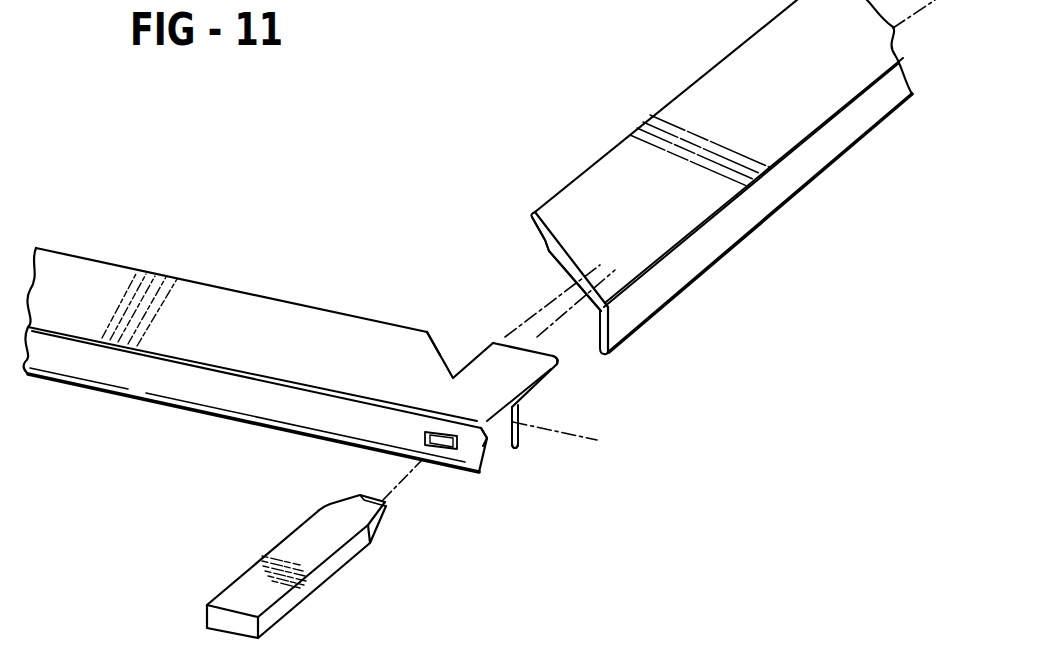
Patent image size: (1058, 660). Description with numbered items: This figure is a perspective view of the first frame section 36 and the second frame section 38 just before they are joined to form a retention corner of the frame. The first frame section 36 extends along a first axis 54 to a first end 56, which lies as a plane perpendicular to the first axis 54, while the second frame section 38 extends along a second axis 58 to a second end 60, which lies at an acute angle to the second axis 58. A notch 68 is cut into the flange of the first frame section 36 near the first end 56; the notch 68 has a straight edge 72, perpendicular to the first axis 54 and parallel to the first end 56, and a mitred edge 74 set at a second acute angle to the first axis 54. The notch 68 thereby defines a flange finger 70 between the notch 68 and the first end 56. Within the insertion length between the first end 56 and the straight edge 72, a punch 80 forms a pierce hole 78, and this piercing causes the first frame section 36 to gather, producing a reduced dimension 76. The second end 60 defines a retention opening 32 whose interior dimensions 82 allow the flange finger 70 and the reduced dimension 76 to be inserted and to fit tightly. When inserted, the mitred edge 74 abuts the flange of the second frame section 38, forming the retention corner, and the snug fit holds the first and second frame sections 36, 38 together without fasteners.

The retention opening 32 is at (603, 294).
The first frame section 36 is at (268, 288).
The second frame section 38 is at (688, 72).
The first axis 54 is at (568, 441).
The first end 56 is at (530, 404).
The second axis 58 is at (555, 311).
The second end 60 is at (572, 280).
The notch 68 is at (448, 316).
The flange finger 70 is at (554, 362).
The straight edge 72 is at (493, 343).
The mitred edge 74 is at (427, 328).
The reduced dimension 76 is at (498, 446).
The pierce hole 78 is at (447, 444).
The punch 80 is at (247, 590).
The interior dimensions 82 is at (587, 268).